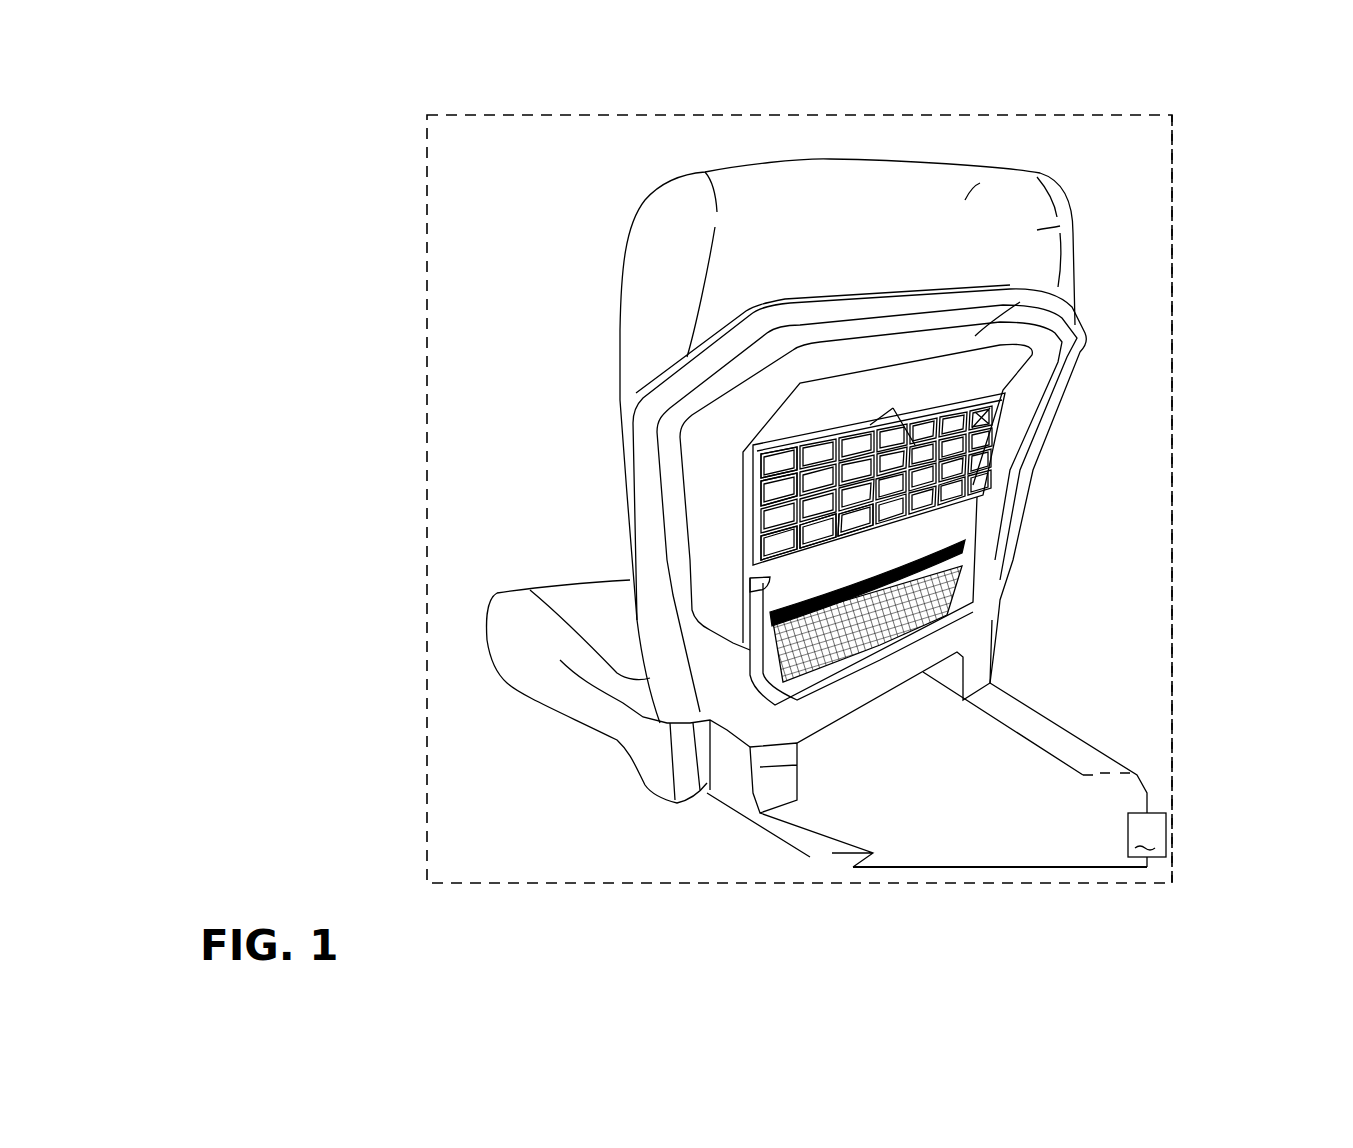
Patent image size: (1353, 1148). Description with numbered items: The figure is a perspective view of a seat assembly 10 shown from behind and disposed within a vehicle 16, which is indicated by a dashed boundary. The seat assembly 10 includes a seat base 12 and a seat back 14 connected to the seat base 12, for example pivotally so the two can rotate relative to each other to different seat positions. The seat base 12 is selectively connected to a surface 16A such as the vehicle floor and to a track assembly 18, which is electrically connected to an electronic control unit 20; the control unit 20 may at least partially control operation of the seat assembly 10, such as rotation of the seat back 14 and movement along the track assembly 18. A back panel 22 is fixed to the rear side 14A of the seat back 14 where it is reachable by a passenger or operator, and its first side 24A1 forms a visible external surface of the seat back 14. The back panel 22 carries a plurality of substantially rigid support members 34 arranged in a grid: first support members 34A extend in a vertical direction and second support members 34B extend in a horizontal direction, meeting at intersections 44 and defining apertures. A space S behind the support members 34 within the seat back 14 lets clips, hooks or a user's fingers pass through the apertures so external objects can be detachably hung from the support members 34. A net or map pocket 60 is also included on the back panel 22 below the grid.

The seat assembly 10 is at (567, 300).
The seat base 12 is at (510, 608).
The seat back 14 is at (1037, 230).
The rear side 14A is at (967, 200).
The vehicle 16 is at (1173, 434).
The surface 16A is at (982, 796).
The track assembly 18 is at (805, 830).
The electronic control unit (ECU) 20 is at (1147, 835).
The back panel 22 is at (1020, 338).
The first side 24A1 is at (978, 335).
The support members 34 is at (751, 540).
The first support members 34A is at (858, 537).
The second support members 34B is at (982, 472).
The intersections 44 is at (893, 408).
The net pocket and/or map pocket 60 is at (790, 690).
The space S is at (973, 487).